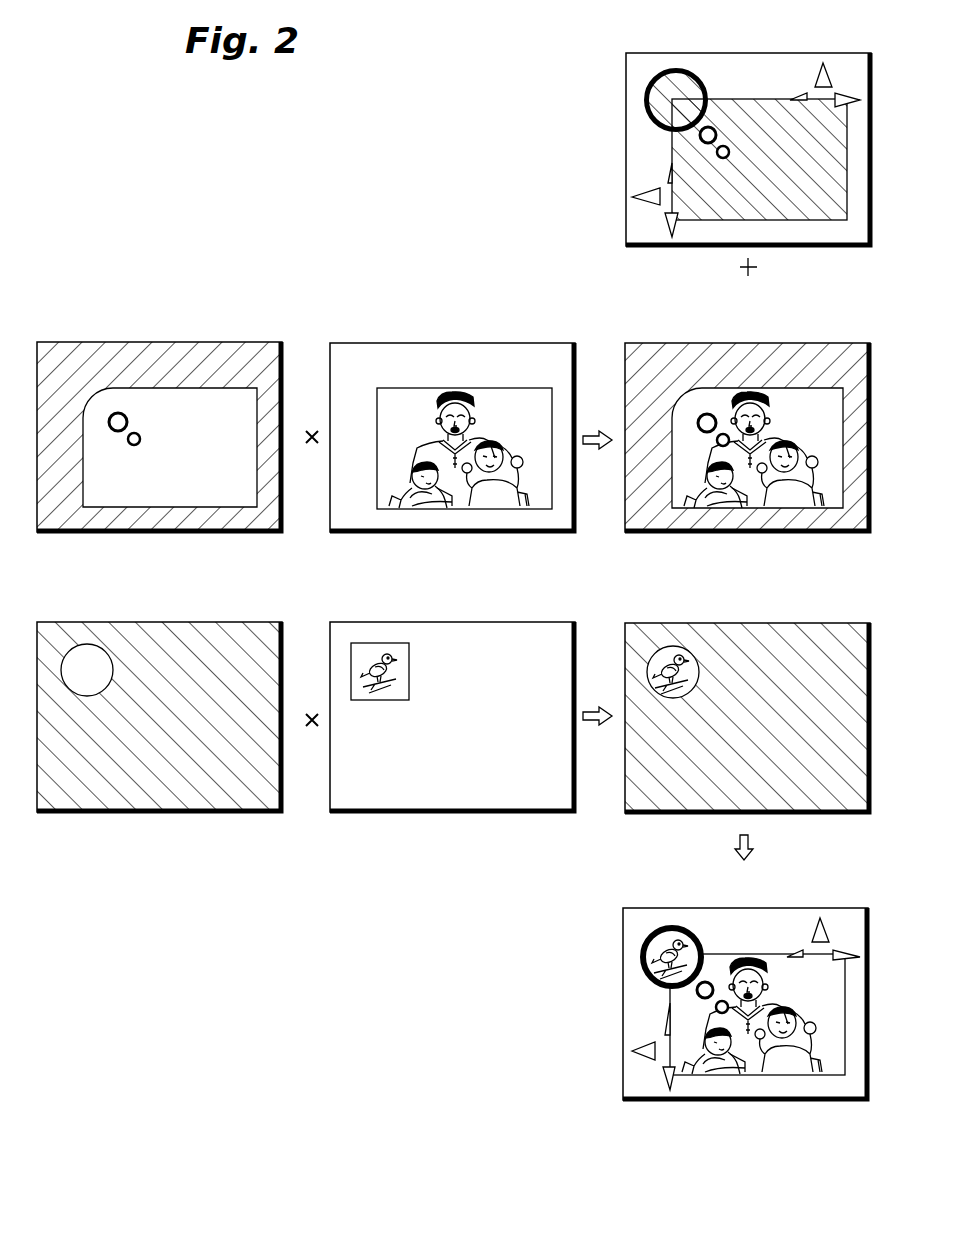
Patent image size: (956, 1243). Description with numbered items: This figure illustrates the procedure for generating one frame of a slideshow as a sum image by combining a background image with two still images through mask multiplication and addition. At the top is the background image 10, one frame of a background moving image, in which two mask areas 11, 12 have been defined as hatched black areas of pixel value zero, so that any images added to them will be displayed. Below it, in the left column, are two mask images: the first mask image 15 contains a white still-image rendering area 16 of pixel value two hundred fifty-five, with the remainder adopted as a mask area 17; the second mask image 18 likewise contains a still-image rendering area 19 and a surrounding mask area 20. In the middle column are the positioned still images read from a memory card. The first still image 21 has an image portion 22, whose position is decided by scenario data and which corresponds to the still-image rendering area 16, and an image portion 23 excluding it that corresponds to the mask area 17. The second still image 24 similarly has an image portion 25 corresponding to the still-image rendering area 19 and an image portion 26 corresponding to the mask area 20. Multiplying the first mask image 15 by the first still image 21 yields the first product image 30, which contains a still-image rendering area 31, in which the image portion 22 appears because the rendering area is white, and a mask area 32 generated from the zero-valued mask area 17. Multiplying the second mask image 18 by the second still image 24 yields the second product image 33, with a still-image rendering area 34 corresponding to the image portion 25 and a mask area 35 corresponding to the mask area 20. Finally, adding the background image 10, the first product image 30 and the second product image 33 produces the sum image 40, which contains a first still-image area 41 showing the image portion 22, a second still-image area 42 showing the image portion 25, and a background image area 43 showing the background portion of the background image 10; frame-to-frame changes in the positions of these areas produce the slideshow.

The background image 10 is at (704, 126).
The mask area 11 is at (642, 163).
The mask area 12 is at (660, 93).
The first mask image 15 is at (172, 398).
The still-image rendering area 16 is at (240, 428).
The mask area 17 is at (57, 358).
The second mask image 18 is at (159, 712).
The still-image rendering area 19 is at (90, 667).
The mask area 20 is at (107, 780).
The first still image 21 is at (457, 399).
The image portion 22 is at (513, 402).
The image portion 23 is at (352, 358).
The second still image 24 is at (478, 716).
The image portion 25 is at (403, 659).
The image portion 26 is at (475, 782).
The first product image 30 is at (761, 401).
The still-image rendering area 31 is at (832, 397).
The mask area 32 is at (650, 353).
The second product image 33 is at (759, 707).
The still-image rendering area 34 is at (672, 658).
The mask area 35 is at (698, 775).
The sum image 40 is at (707, 999).
The first still-image area 41 is at (790, 1057).
The second still-image area 42 is at (643, 947).
The background image area 43 is at (637, 1025).